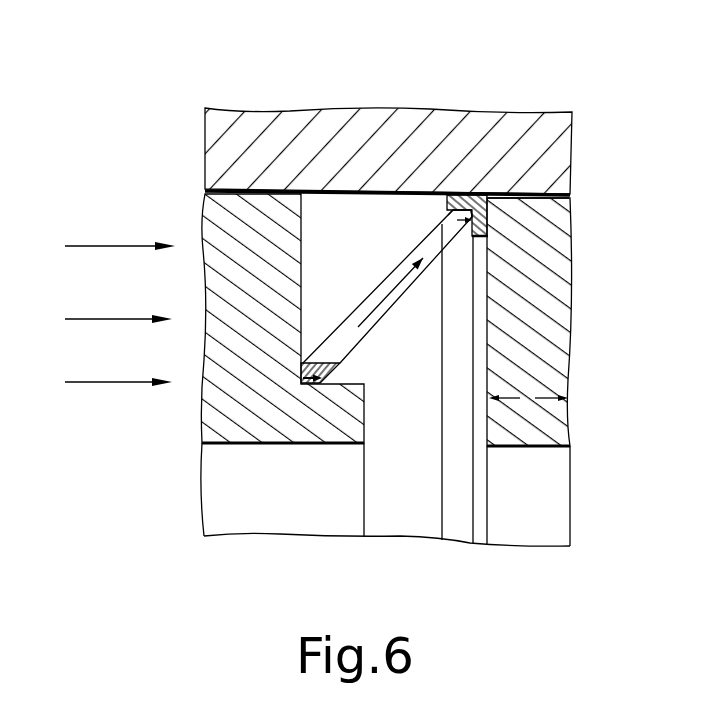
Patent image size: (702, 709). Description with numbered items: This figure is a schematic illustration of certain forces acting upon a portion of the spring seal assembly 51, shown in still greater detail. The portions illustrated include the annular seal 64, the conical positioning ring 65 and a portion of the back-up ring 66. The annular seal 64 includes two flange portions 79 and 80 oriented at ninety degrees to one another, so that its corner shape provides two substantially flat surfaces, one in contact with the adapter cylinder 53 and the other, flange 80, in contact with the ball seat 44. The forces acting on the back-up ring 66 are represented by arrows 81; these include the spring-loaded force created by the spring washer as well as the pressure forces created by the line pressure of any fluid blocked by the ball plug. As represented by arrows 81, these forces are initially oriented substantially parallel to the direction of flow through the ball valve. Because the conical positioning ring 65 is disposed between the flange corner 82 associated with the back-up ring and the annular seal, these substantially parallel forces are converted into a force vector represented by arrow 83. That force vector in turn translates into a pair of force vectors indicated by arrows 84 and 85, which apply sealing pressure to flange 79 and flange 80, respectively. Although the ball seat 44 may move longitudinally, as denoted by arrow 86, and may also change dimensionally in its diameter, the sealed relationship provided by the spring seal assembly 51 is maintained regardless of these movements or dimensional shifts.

The ball seat 44 is at (562, 331).
The spring seal assembly 51 is at (362, 158).
The adapter cylinder 53 is at (565, 143).
The annular seal 64 is at (470, 198).
The conical positioning ring 65 is at (426, 234).
The back-up ring 66 is at (213, 208).
The flange portion 79 is at (485, 194).
The flange portion 80 is at (490, 222).
The arrows representing forces on back-up ring 81 is at (85, 246).
The flange corner 82 is at (338, 372).
The arrow representing force vector 83 is at (392, 293).
The arrow representing force vector 84 is at (453, 212).
The arrow representing force vector 85 is at (468, 209).
The arrow denoting longitudinal movement 86 is at (532, 396).